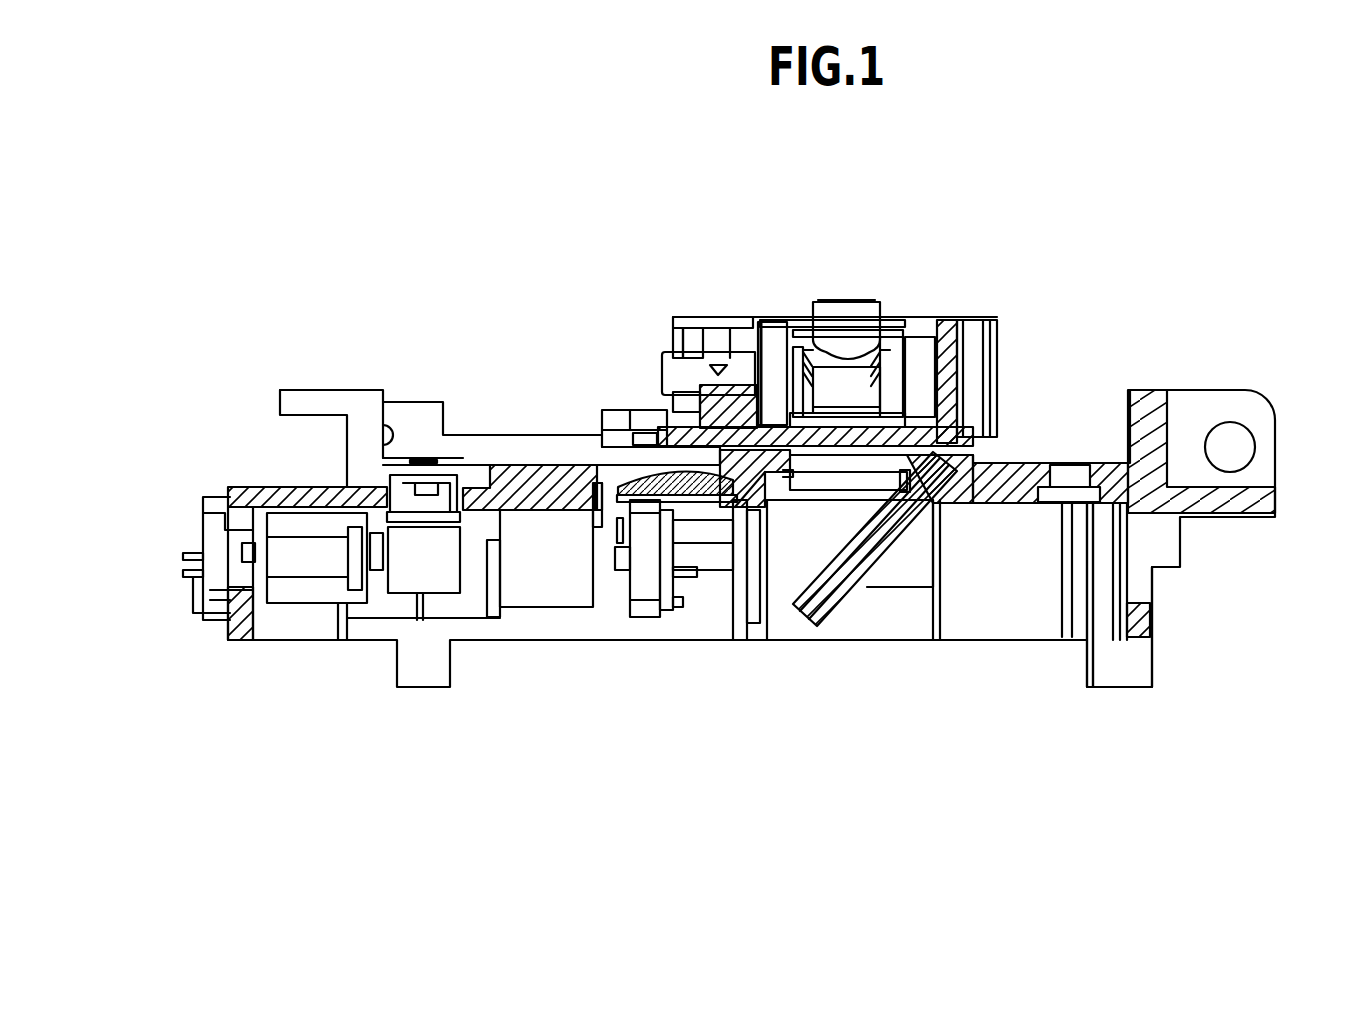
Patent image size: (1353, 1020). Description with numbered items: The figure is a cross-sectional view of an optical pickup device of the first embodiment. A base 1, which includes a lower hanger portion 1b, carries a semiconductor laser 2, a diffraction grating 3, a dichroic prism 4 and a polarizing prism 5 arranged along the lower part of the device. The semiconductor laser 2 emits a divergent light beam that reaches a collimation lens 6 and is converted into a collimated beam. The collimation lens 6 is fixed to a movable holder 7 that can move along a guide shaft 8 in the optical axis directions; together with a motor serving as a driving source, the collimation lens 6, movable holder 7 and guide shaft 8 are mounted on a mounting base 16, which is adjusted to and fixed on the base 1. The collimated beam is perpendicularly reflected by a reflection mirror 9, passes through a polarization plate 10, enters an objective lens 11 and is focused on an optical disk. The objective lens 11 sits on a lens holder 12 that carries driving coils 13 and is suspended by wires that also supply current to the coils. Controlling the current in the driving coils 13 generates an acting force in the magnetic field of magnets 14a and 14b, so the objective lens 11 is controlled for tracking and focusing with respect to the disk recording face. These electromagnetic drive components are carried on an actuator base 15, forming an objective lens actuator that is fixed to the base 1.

The base 1 is at (1143, 420).
The hanger bracket of frame 1b is at (1135, 565).
The semiconductor laser 2 is at (220, 555).
The diffraction grating 3 is at (333, 555).
The dichroic prism 4 is at (420, 578).
The polarizing prism 5 is at (518, 590).
The collimation lens 6 is at (657, 605).
The movable holder 7 is at (638, 600).
The guide shaft 8 is at (707, 568).
The reflection mirror 9 is at (835, 600).
The polarization plate 10 is at (900, 487).
The objective lens 11 is at (822, 302).
The lens holder 12 is at (915, 380).
The driving coils 13 is at (763, 392).
The magnet 14a is at (755, 385).
The magnet 14b is at (963, 317).
The actuator base 15 is at (690, 428).
The mounting base 16 is at (633, 480).